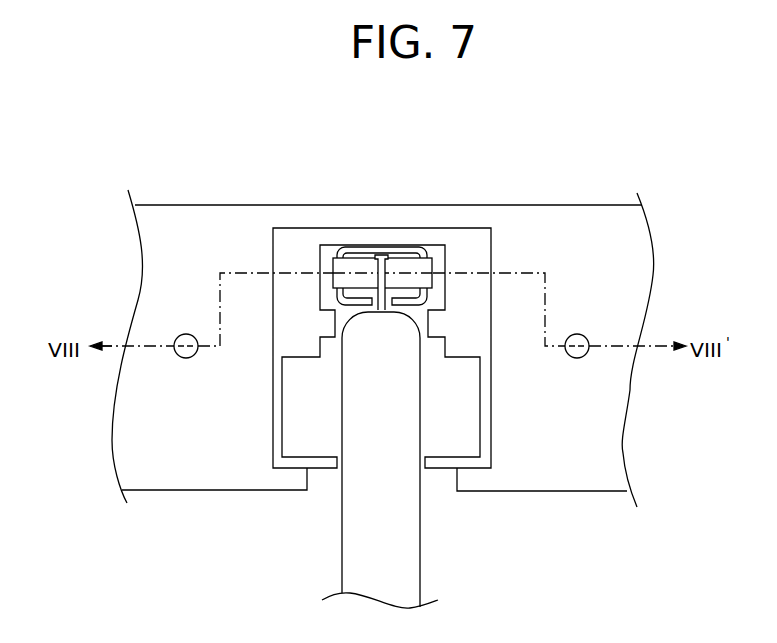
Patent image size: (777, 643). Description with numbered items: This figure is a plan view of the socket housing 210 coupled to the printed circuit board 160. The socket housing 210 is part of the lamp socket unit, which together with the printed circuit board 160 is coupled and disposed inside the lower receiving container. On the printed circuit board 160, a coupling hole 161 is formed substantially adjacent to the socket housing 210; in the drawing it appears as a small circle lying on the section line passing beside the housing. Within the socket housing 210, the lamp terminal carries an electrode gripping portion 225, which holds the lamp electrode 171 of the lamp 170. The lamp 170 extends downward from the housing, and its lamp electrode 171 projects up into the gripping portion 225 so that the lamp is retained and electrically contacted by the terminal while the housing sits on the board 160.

The printed circuit board 160 is at (193, 257).
The coupling hole 161 is at (179, 339).
The lamp 170 is at (347, 552).
The lamp electrode 171 is at (380, 256).
The socket housing 210 is at (485, 403).
The electrode gripping portion 225 is at (407, 267).